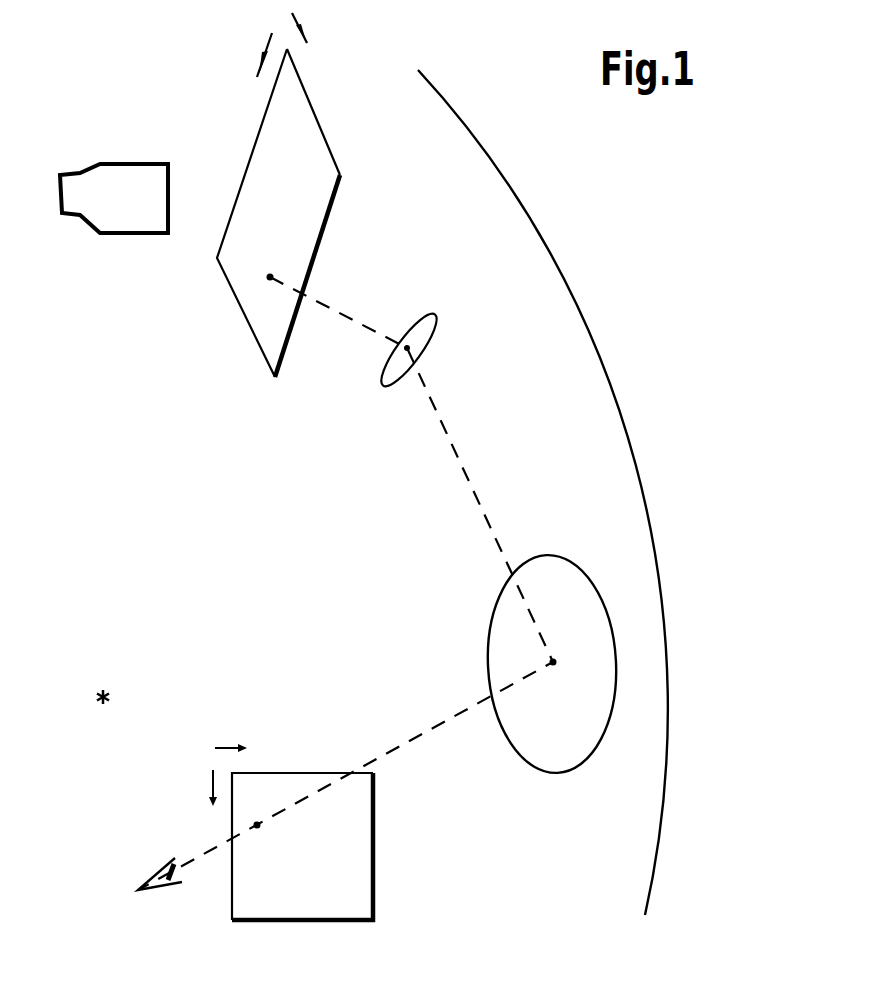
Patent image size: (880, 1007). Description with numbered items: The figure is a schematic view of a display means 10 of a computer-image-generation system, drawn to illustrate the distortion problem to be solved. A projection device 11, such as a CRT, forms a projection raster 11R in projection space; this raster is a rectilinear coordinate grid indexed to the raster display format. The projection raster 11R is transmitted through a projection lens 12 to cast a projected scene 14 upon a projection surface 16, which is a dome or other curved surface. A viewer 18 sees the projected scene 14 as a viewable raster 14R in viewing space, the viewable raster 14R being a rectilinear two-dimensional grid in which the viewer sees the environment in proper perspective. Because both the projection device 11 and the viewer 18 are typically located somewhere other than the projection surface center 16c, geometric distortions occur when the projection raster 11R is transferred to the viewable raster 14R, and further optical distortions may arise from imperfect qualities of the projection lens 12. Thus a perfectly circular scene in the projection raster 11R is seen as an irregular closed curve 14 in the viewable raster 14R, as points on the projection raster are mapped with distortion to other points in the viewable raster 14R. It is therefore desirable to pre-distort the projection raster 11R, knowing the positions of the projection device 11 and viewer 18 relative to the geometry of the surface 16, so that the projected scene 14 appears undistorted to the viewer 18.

The display means 10 is at (240, 587).
The projection device 11 is at (133, 164).
The projection raster 11R is at (327, 137).
The projection lens 12 is at (438, 314).
The projected scene 14 is at (603, 596).
The viewable raster 14R is at (373, 862).
The projection surface 16 is at (547, 233).
The projection surface center 16c is at (127, 708).
The viewer 18 is at (155, 890).